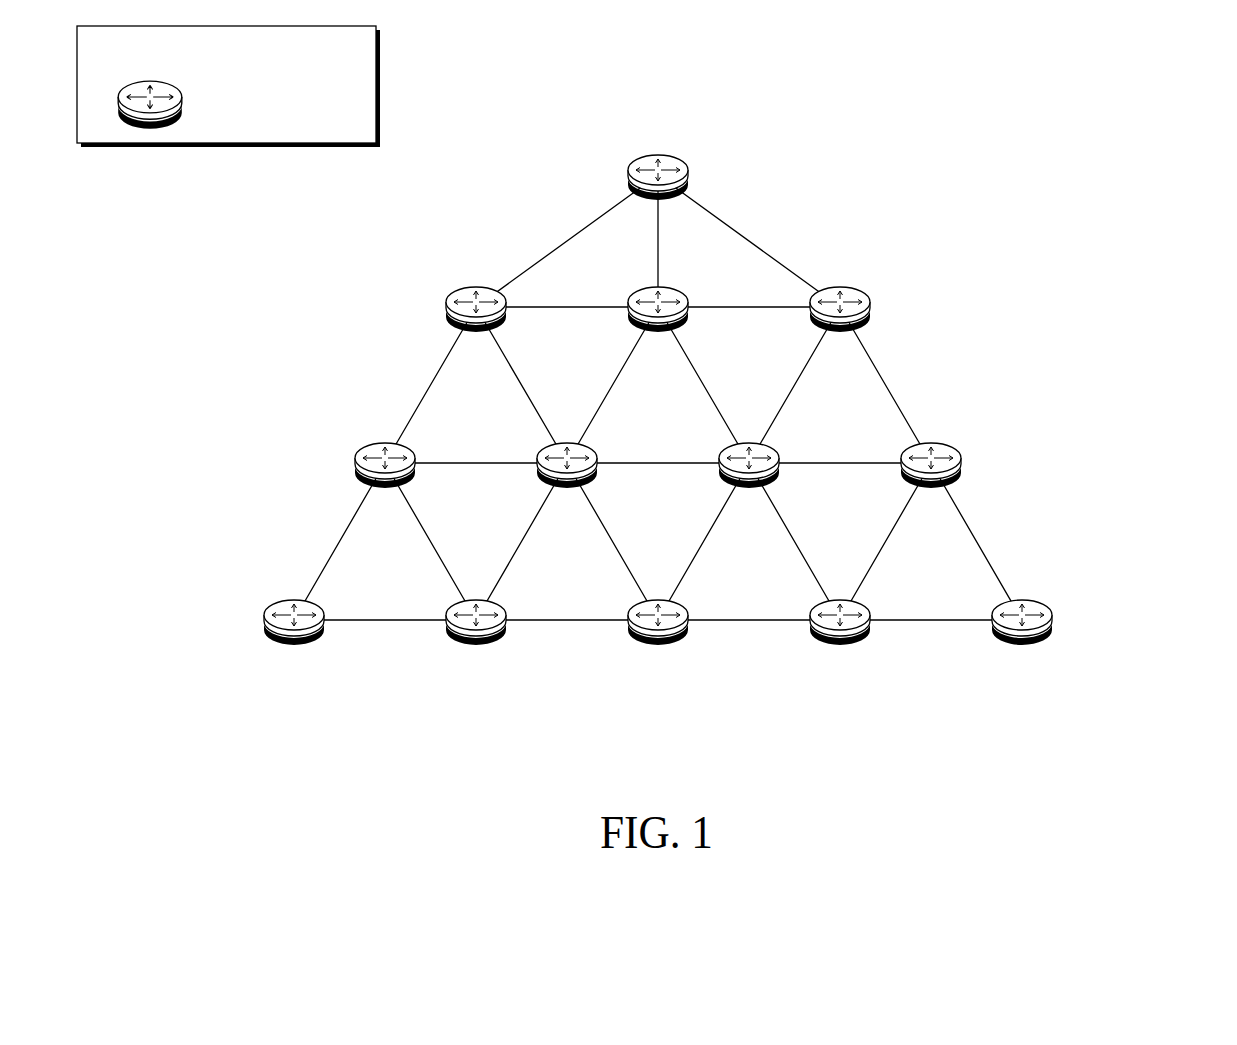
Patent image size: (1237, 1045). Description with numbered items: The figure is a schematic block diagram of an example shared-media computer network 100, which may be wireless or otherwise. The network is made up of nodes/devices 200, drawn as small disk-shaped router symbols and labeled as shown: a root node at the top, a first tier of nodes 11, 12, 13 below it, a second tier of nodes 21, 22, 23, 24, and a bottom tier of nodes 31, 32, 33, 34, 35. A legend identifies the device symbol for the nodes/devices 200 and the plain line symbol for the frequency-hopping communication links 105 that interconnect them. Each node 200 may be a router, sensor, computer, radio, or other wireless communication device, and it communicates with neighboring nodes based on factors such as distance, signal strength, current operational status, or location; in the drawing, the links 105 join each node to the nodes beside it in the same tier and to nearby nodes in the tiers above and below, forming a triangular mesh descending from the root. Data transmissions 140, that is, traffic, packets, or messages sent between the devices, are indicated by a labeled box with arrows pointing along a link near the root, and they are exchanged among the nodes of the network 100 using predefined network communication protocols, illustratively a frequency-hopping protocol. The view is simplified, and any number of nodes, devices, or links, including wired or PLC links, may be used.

The computer network 100 is at (1139, 80).
The frequency-hopping communication links 105 is at (108, 57).
The nodes/devices 200 is at (231, 105).
The data transmissions 140 is at (727, 182).
The node 11 is at (476, 325).
The node 12 is at (658, 325).
The node 13 is at (840, 325).
The node 21 is at (385, 481).
The node 22 is at (567, 481).
The node 23 is at (749, 481).
The node 24 is at (931, 481).
The node 31 is at (294, 637).
The node 32 is at (476, 637).
The node 33 is at (658, 637).
The node 34 is at (840, 637).
The node 35 is at (1022, 637).